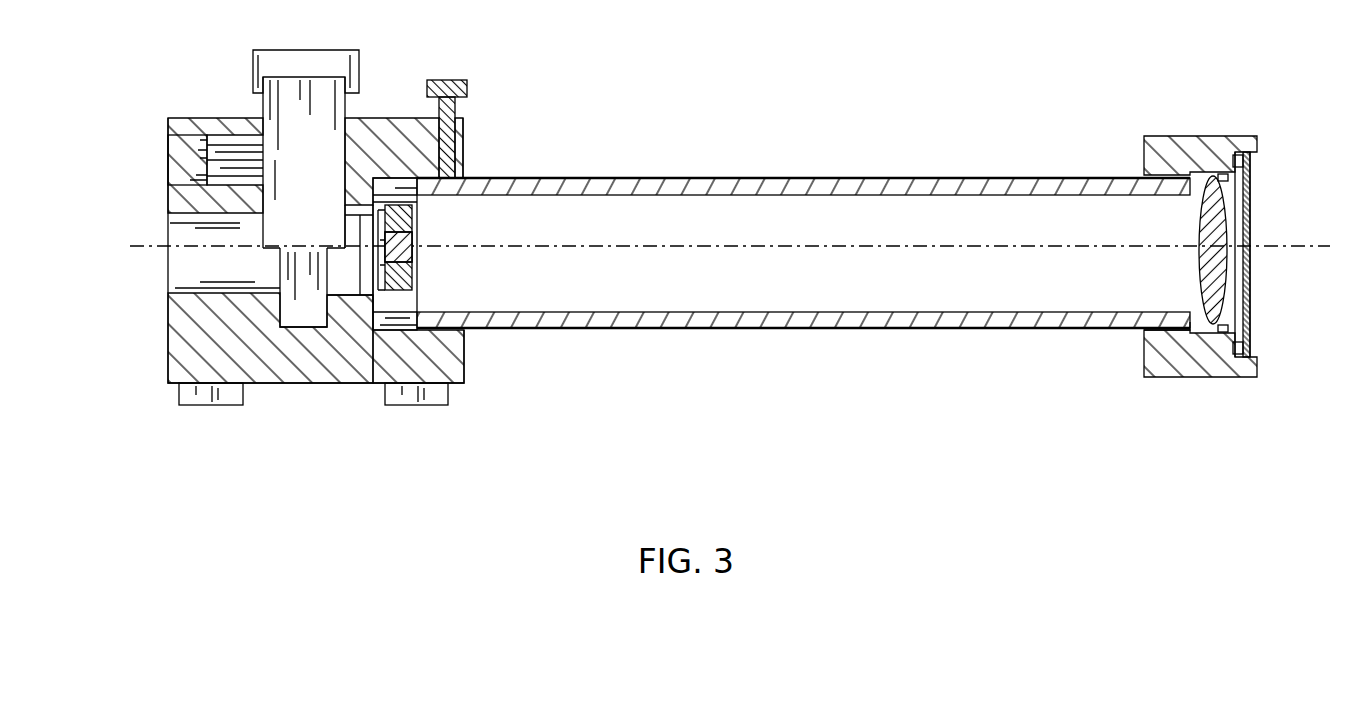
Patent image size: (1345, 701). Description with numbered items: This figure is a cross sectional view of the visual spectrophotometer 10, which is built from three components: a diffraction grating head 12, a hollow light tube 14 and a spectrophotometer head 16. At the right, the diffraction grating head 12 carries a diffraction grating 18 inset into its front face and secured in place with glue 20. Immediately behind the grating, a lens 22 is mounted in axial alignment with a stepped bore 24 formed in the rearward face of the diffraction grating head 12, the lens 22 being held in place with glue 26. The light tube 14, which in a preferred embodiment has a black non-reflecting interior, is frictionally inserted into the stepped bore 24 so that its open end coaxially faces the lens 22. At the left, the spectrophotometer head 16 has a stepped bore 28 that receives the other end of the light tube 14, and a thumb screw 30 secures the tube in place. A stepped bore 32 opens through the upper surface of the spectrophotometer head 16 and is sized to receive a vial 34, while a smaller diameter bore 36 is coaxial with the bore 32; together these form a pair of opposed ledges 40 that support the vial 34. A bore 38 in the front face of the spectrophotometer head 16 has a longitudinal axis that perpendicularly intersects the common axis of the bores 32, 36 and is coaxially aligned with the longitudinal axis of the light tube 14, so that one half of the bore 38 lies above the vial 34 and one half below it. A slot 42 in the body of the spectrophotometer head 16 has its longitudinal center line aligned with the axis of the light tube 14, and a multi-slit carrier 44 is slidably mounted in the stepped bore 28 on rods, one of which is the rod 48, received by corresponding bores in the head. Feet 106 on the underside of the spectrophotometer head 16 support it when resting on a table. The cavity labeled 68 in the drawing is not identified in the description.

The visual spectrophotometer 10 is at (851, 439).
The diffraction grating head 12 is at (1180, 378).
The hollow light tube 14 is at (905, 329).
The spectrophotometer head 16 is at (464, 371).
The diffraction grating 18 is at (1251, 219).
The glue 20 is at (1244, 160).
The lens 22 is at (1216, 268).
The stepped bore 24 is at (1147, 322).
The glue 26 is at (1229, 178).
The stepped bore 28 is at (461, 325).
The thumb screw 30 is at (433, 81).
The stepped bore 32 is at (338, 160).
The vial 34 is at (273, 106).
The smaller diameter bore 36 is at (282, 318).
The bore 38 is at (186, 217).
The opposed ledges 40 is at (277, 250).
The slot 42 is at (381, 287).
The multi-slit carrier 44 is at (411, 198).
The rod 48 is at (405, 245).
The connector cavity 68 is at (205, 140).
The feet 106 is at (208, 405).